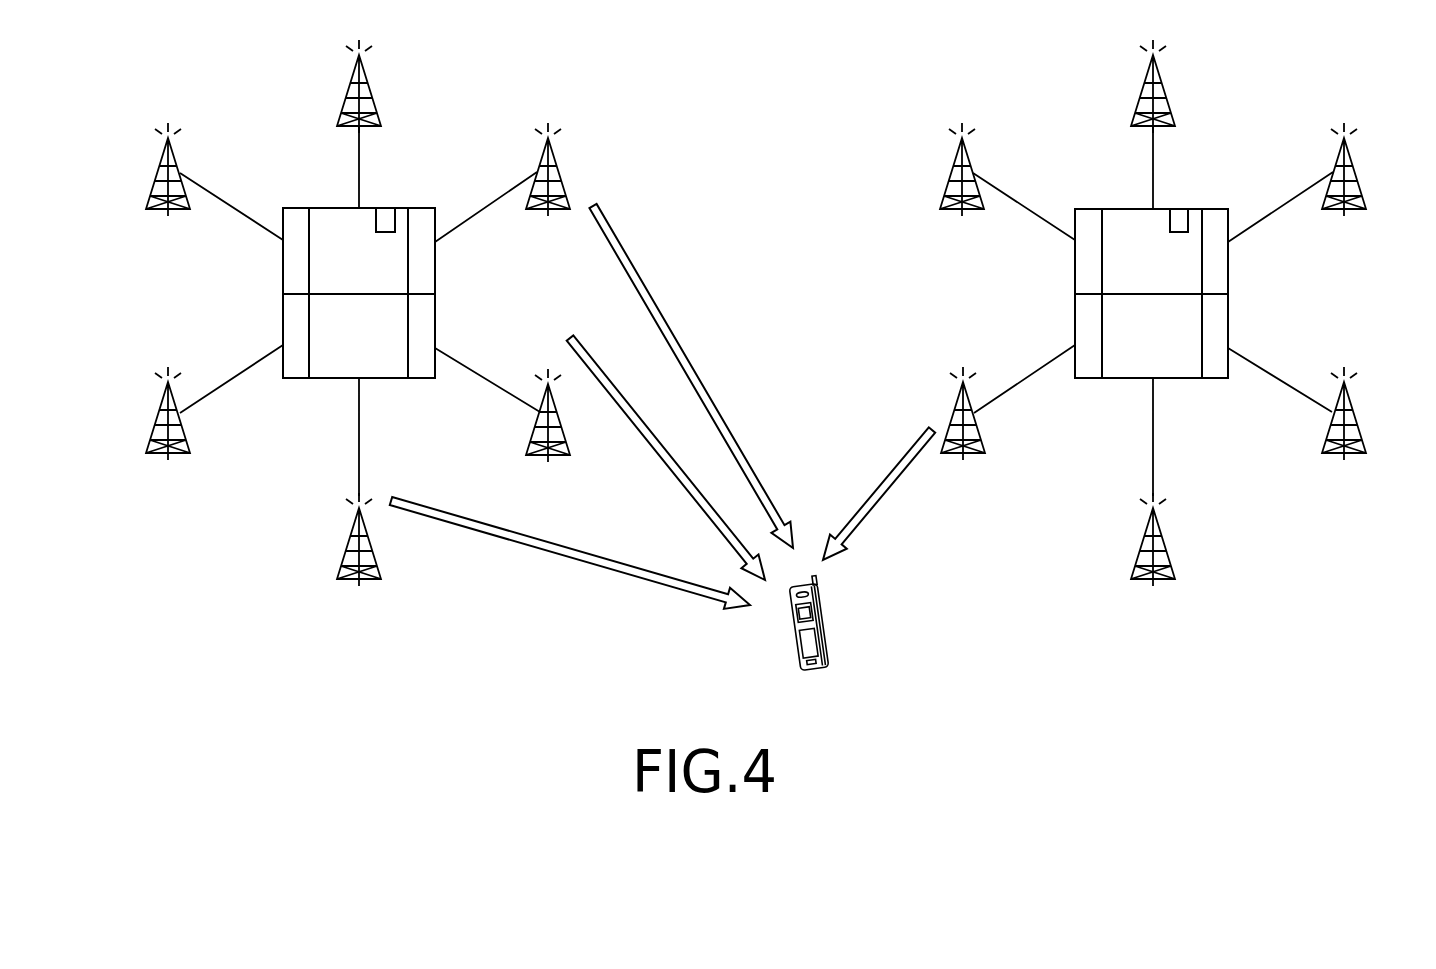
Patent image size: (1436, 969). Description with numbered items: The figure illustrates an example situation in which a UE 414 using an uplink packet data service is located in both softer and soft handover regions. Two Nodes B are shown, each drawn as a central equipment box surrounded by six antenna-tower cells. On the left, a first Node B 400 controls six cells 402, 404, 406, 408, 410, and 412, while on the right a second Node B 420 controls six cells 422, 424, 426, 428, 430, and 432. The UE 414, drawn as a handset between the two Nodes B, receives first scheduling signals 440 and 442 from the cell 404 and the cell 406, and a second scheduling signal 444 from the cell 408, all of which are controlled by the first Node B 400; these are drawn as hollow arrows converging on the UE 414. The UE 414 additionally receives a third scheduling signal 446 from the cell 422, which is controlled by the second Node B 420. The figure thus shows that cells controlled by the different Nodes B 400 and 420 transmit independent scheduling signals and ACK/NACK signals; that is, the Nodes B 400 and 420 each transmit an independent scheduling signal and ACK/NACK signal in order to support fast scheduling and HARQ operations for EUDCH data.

The Node B#1 400 is at (436, 275).
The cell 402 is at (148, 418).
The cell#12 404 is at (381, 540).
The cell#11 406 is at (527, 438).
The cell#21 408 is at (563, 172).
The cell 410 is at (381, 88).
The cell 412 is at (148, 174).
The UE 414 is at (826, 632).
The Node B#2 420 is at (1229, 275).
The cell#31 422 is at (949, 420).
The cell 424 is at (1175, 540).
The cell 426 is at (1323, 438).
The cell 428 is at (1357, 172).
The cell 430 is at (1175, 88).
The cell 432 is at (942, 174).
The scheduling signal#1 440 is at (560, 556).
The scheduling signal#1 442 is at (635, 425).
The scheduling signal#2 444 is at (692, 367).
The scheduling signal#3 446 is at (876, 492).